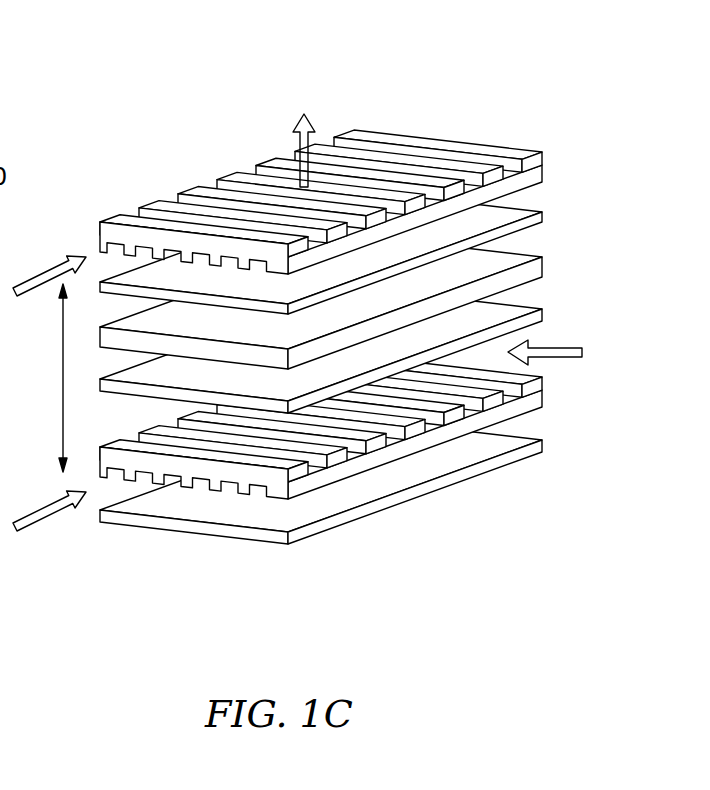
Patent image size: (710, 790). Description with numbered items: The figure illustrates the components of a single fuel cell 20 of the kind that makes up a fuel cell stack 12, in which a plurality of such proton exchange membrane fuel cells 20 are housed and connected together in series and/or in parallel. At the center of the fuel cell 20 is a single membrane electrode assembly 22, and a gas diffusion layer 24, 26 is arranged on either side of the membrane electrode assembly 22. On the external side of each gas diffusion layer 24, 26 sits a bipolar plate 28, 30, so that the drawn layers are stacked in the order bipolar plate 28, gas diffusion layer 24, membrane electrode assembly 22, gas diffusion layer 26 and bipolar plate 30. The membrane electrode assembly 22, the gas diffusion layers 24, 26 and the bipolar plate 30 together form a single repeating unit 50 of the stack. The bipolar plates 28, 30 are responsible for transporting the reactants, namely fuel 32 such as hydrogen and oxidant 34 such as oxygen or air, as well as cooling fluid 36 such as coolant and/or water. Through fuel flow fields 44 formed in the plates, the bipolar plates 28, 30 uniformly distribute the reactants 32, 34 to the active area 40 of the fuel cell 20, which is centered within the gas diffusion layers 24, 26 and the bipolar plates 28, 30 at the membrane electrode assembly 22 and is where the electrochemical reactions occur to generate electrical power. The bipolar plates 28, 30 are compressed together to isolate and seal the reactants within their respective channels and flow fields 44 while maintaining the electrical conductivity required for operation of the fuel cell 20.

The fuel cell stack 12 is at (143, 140).
The fuel cell 20 is at (358, 328).
The membrane electrode assembly 22 is at (562, 268).
The gas diffusion layer 24 is at (367, 251).
The gas diffusion layer 26 is at (562, 317).
The bipolar plate 28 is at (562, 167).
The bipolar plate 30 is at (560, 392).
The fuel 32 is at (552, 348).
The oxidant 34 is at (44, 284).
The cooling fluid 36 is at (530, 407).
The active area 40 is at (56, 391).
The fuel flow fields 44 is at (439, 130).
The repeating unit 50 is at (402, 300).